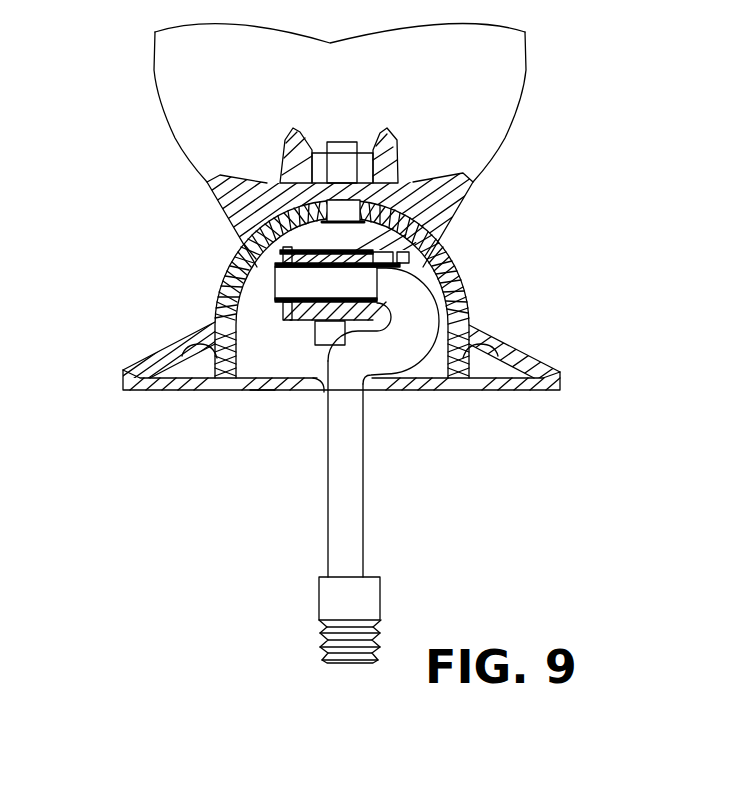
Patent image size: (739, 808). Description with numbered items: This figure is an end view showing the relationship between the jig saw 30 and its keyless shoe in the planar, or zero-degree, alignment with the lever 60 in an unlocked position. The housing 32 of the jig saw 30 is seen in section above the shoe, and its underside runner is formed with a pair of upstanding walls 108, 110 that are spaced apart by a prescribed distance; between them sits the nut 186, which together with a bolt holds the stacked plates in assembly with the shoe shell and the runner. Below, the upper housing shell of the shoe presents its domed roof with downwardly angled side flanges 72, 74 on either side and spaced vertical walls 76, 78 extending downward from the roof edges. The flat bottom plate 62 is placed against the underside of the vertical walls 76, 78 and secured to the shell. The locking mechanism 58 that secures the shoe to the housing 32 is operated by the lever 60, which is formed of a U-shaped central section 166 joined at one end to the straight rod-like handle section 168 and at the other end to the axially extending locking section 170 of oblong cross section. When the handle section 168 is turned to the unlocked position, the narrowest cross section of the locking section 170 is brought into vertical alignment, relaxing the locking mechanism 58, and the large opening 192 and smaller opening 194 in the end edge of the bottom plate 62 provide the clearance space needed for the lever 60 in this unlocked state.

The jig saw 30 is at (115, 124).
The housing 32 is at (548, 62).
The locking mechanism 58 is at (413, 255).
The lever 60 is at (407, 465).
The bottom plate 62 is at (343, 379).
The side flange 72 is at (183, 343).
The side flange 74 is at (528, 352).
The vertical wall 76 is at (225, 367).
The vertical wall 78 is at (463, 355).
The upstanding wall 108 is at (302, 145).
The upstanding wall 110 is at (383, 130).
The U-shaped central section 166 is at (420, 322).
The handle section 168 is at (350, 510).
The locking section 170 is at (277, 297).
The nut 186 is at (340, 163).
The large opening 192 is at (262, 393).
The smaller opening 194 is at (320, 390).